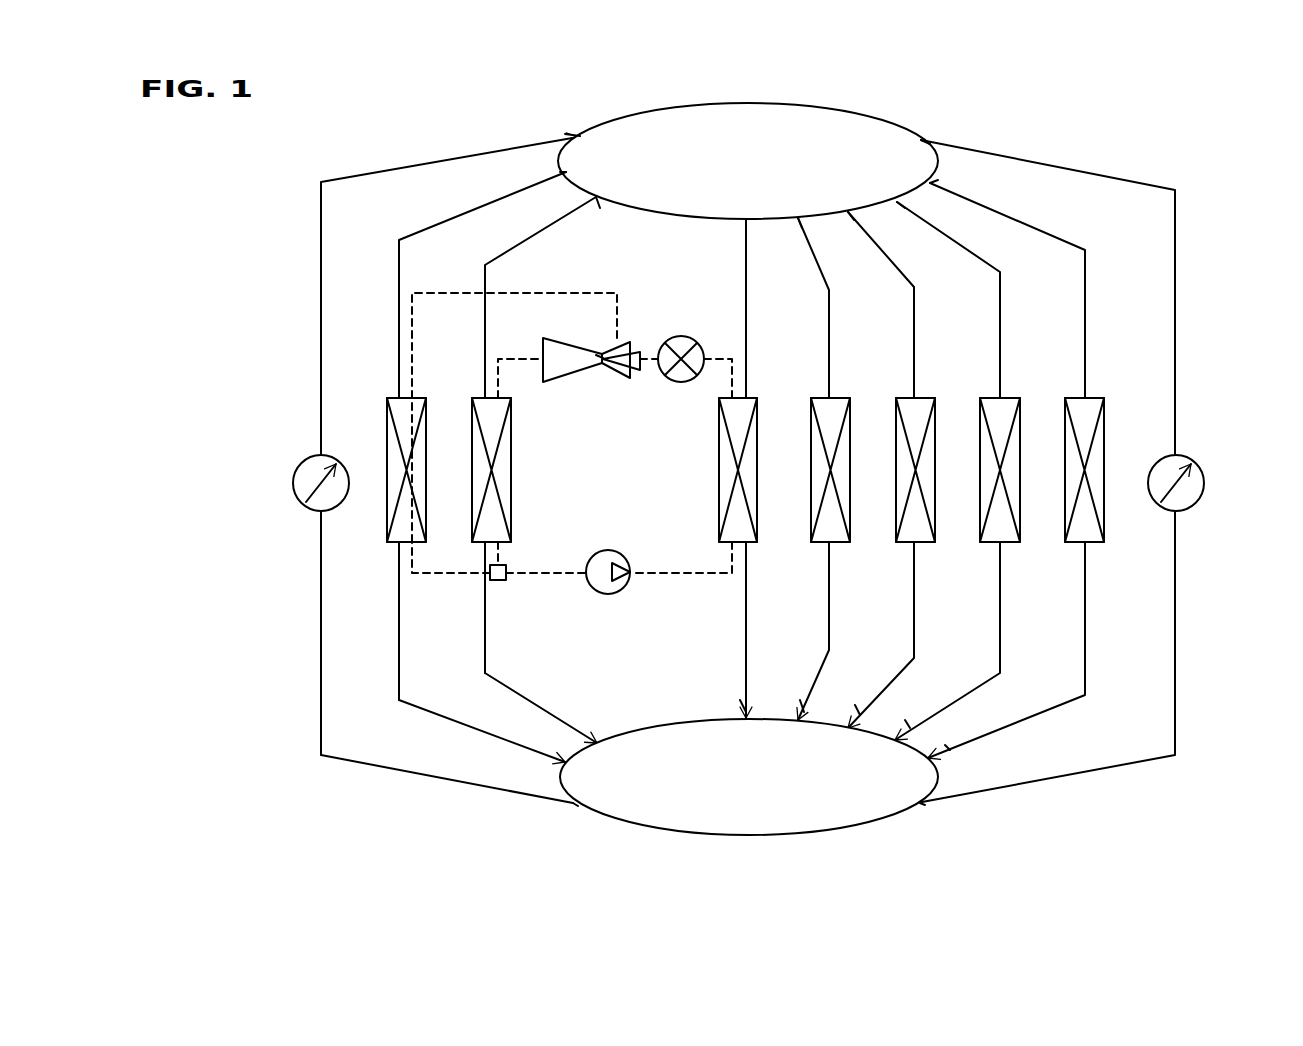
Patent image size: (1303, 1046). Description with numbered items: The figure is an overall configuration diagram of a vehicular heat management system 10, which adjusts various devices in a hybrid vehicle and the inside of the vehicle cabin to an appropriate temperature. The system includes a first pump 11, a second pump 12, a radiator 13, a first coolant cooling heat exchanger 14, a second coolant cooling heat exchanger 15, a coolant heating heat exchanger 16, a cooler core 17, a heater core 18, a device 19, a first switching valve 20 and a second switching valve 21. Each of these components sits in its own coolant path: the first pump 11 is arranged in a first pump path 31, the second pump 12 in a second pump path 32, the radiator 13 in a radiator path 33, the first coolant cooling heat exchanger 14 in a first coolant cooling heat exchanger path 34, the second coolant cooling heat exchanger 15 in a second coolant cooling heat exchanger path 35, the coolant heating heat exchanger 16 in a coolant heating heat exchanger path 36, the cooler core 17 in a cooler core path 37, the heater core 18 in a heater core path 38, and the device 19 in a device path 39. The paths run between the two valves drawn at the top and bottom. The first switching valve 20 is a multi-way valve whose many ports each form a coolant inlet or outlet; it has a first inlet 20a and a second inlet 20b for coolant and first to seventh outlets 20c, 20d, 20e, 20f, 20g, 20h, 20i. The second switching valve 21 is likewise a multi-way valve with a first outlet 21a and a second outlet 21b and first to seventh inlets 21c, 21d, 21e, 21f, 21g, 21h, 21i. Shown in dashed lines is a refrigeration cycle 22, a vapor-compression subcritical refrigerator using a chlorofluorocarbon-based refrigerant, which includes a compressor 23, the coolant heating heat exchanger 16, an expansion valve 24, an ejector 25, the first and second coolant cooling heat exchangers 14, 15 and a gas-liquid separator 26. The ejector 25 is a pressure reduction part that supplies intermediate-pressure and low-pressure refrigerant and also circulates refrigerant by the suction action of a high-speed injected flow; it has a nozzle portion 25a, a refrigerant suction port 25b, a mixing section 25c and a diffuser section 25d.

The vehicular heat management system 10 is at (434, 136).
The first pump 11 is at (310, 465).
The second pump 12 is at (1202, 478).
The radiator 13 is at (850, 478).
The first coolant cooling heat exchanger 14 is at (472, 470).
The second coolant cooling heat exchanger 15 is at (387, 470).
The coolant heating heat exchanger 16 is at (757, 478).
The cooler core 17 is at (935, 478).
The heater core 18 is at (1020, 478).
The device 19 is at (1104, 478).
The first switching valve 20 is at (789, 103).
The first inlet 20a is at (578, 130).
The second inlet 20b is at (925, 138).
The first outlet 20c is at (796, 222).
The second outlet 20d is at (598, 208).
The third outlet 20e is at (565, 172).
The fourth outlet 20f is at (735, 226).
The fifth outlet 20g is at (845, 216).
The sixth outlet 20h is at (893, 206).
The seventh outlet 20i is at (932, 180).
The second switching valve 21 is at (790, 838).
The first outlet 21a is at (580, 808).
The second outlet 21b is at (925, 800).
The first inlet 21c is at (795, 718).
The second inlet 21d is at (600, 740).
The third inlet 21e is at (568, 755).
The fourth inlet 21f is at (740, 716).
The fifth inlet 21g is at (850, 725).
The sixth inlet 21h is at (893, 736).
The seventh inlet 21i is at (932, 752).
The refrigeration cycle 22 is at (668, 580).
The compressor 23 is at (620, 556).
The expansion valve 24 is at (683, 383).
The ejector 25 is at (598, 380).
The nozzle portion 25a is at (622, 372).
The refrigerant suction port 25b is at (615, 340).
The mixing section 25c is at (598, 352).
The diffuser section 25d is at (560, 372).
The gas-liquid separator 26 is at (506, 570).
The first pump path 31 is at (321, 595).
The second pump path 32 is at (1177, 568).
The radiator path 33 is at (834, 573).
The first coolant cooling heat exchanger path 34 is at (485, 593).
The second coolant cooling heat exchanger path 35 is at (399, 593).
The coolant heating heat exchanger path 36 is at (750, 573).
The cooler core path 37 is at (919, 573).
The heater core path 38 is at (1005, 573).
The device path 39 is at (1090, 573).